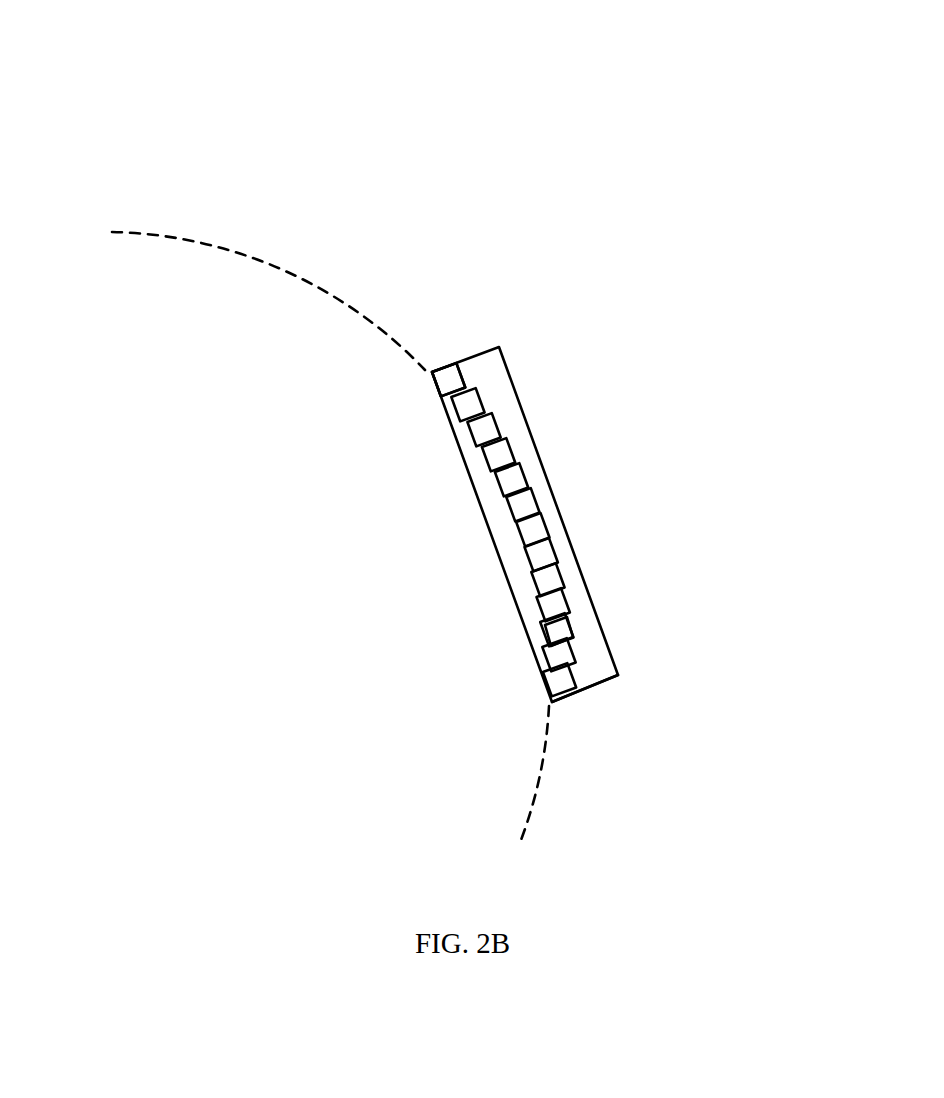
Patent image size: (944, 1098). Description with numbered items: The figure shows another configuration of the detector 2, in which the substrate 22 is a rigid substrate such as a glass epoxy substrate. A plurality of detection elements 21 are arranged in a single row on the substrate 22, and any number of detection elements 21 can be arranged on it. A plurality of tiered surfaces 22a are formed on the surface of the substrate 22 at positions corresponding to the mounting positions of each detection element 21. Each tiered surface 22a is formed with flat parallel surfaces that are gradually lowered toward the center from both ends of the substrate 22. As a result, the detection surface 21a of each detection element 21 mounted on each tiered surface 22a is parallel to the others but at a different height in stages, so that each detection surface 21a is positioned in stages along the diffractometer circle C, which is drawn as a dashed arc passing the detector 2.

The detector 2 is at (513, 367).
The detection elements 21 is at (437, 372).
The detection surface 21a is at (434, 382).
The substrate 22 is at (480, 350).
The tiered surfaces 22a is at (560, 643).
The diffractometer circle C is at (146, 231).